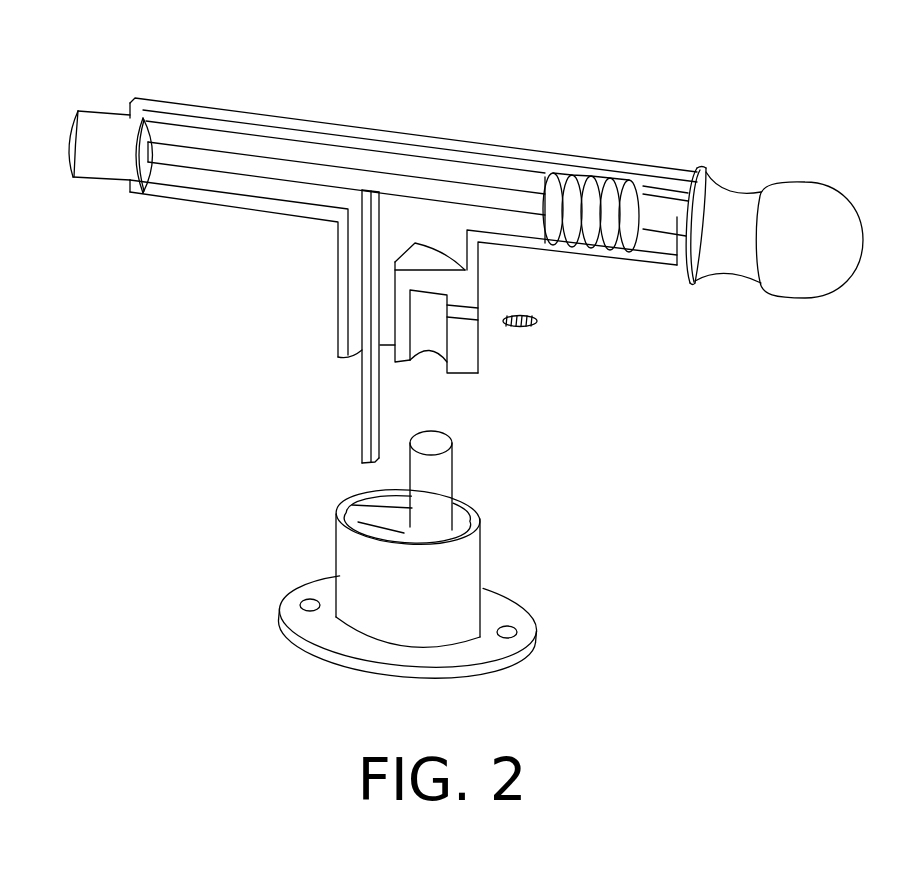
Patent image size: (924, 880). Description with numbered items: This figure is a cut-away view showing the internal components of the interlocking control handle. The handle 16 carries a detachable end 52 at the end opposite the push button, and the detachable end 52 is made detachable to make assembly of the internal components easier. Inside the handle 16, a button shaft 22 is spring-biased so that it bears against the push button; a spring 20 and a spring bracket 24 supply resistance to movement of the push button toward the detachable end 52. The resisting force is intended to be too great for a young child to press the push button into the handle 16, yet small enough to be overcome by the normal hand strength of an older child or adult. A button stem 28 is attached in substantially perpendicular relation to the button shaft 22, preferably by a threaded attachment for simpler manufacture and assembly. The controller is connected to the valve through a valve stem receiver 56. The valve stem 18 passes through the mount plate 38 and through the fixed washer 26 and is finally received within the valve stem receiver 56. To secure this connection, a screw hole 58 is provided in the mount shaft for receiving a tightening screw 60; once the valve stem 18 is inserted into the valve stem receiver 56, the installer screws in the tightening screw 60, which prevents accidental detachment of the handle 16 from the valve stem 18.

The handle 16 is at (470, 140).
The valve stem 18 is at (455, 482).
The spring 20 is at (627, 202).
The button shaft 22 is at (308, 172).
The spring bracket 24 is at (555, 195).
The fixed washer 26 is at (458, 577).
The button stem 28 is at (363, 372).
The mount plate 38 is at (310, 623).
The detachable end 52 is at (805, 268).
The valve stem receiver 56 is at (433, 345).
The screw hole 58 is at (465, 310).
The tightening screw 60 is at (527, 332).